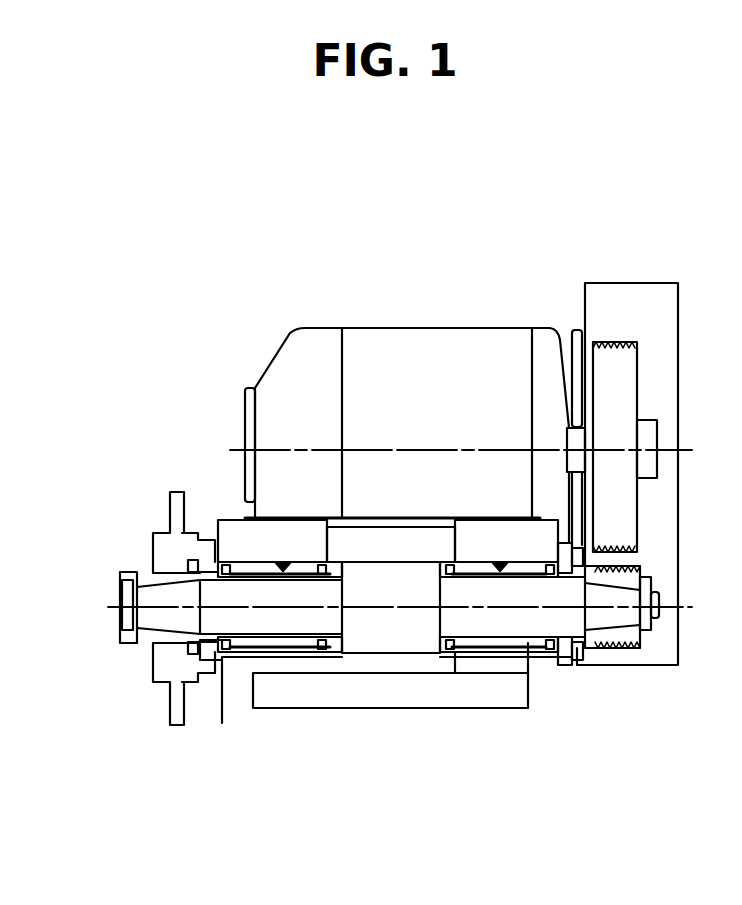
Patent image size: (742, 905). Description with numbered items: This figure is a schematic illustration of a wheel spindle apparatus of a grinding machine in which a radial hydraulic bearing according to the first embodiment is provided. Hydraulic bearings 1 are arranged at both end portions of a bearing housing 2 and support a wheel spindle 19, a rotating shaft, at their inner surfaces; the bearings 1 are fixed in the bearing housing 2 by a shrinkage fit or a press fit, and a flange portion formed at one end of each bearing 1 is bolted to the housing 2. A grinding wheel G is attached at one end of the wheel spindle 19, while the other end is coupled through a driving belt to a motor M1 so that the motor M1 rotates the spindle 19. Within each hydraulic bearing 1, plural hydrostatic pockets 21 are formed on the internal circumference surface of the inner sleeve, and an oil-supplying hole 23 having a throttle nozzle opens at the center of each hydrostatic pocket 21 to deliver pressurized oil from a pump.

The motor M1 is at (475, 342).
The oil-supplying hole 23 is at (500, 562).
The hydraulic bearing 1 is at (313, 650).
The bearing housing 2 is at (238, 683).
The wheel spindle 19 is at (236, 593).
The grinding wheel G is at (173, 718).
The hydrostatic pocket 21 is at (547, 653).